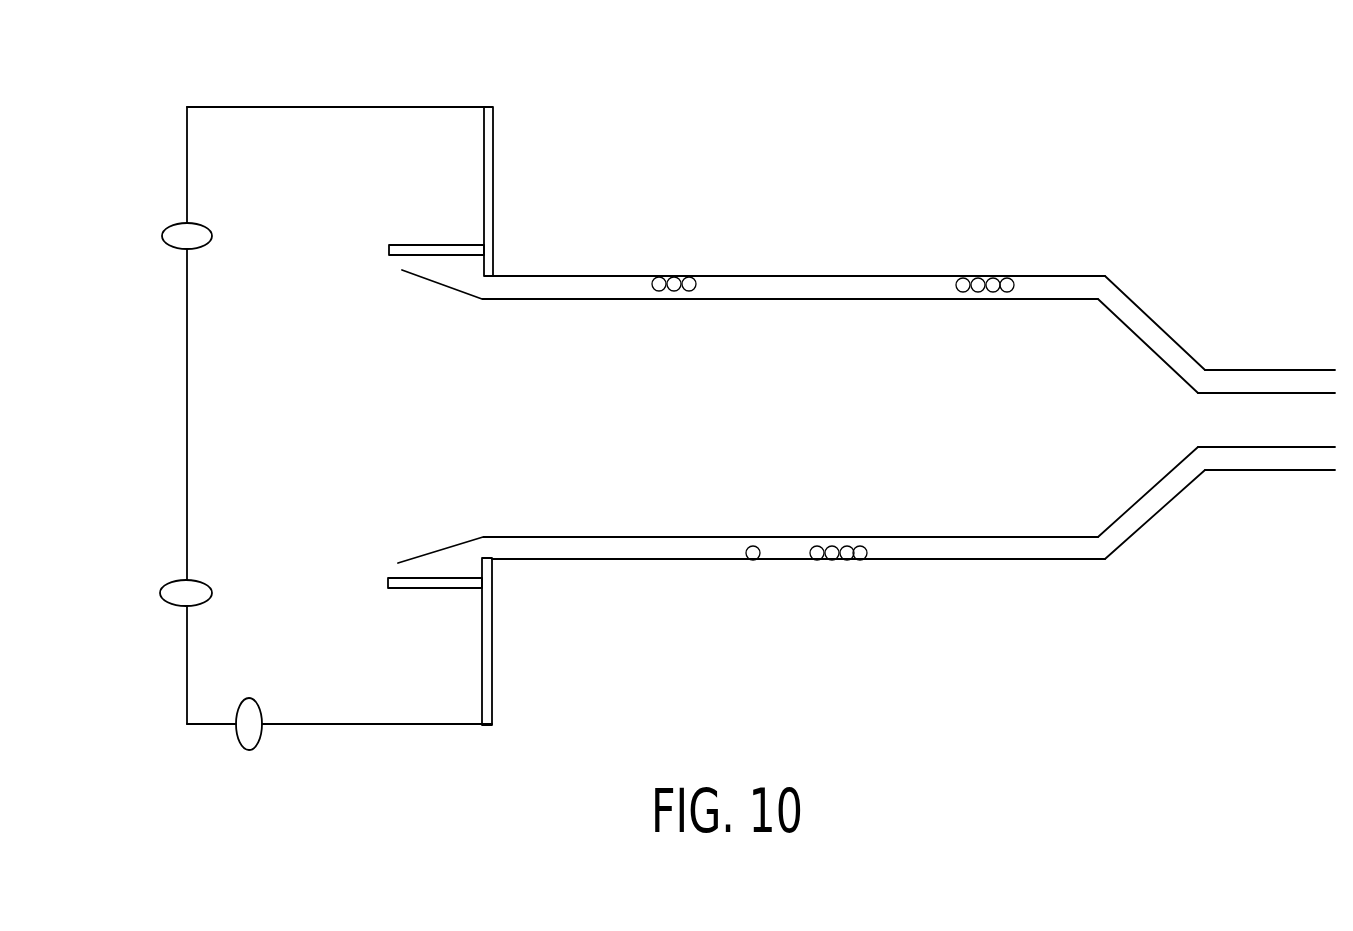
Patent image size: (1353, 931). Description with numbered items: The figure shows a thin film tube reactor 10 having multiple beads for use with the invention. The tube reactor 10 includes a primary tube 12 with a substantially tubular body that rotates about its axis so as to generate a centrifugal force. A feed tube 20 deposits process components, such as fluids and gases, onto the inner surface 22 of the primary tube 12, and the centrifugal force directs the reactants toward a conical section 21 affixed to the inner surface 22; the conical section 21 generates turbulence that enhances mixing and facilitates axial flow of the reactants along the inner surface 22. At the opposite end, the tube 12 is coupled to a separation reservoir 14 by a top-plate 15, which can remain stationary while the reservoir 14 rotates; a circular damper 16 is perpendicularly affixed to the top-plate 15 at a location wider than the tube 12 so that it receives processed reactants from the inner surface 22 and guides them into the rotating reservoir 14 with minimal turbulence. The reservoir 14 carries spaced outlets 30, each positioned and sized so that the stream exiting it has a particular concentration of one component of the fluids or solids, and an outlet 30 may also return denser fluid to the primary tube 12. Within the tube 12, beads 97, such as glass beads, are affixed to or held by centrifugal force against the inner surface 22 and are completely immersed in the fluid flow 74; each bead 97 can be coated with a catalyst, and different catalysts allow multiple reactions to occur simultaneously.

The tube reactor 10 is at (1145, 132).
The primary tube 12 is at (803, 277).
The separation reservoir 14 is at (343, 105).
The top-plate 15 is at (494, 190).
The damper 16 is at (428, 244).
The feed tube 20 is at (1272, 368).
The conical section 21 is at (1150, 318).
The inner surface 22 is at (760, 557).
The outlets 30 is at (162, 236).
The fluid flow 74 is at (1052, 288).
The beads 97 is at (675, 278).